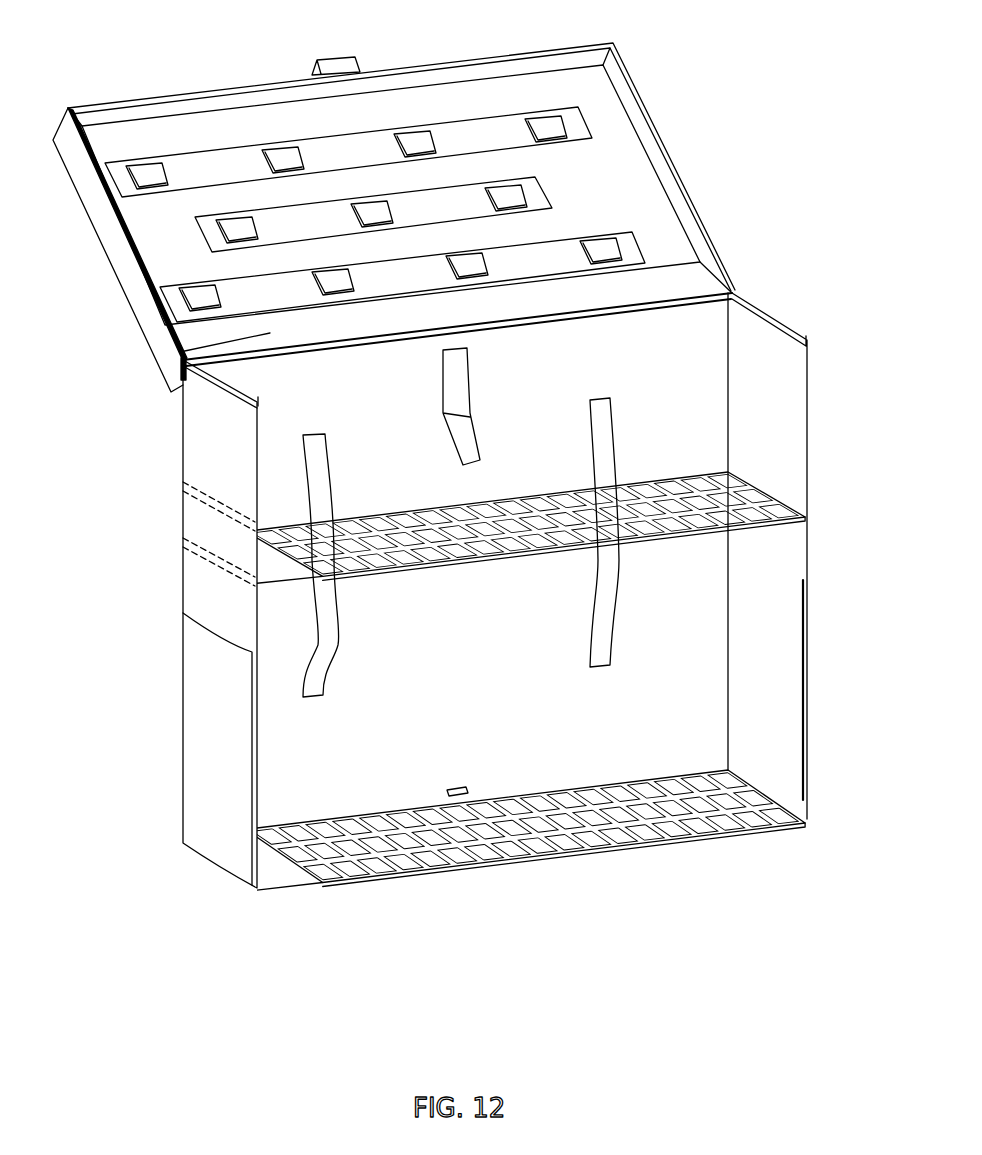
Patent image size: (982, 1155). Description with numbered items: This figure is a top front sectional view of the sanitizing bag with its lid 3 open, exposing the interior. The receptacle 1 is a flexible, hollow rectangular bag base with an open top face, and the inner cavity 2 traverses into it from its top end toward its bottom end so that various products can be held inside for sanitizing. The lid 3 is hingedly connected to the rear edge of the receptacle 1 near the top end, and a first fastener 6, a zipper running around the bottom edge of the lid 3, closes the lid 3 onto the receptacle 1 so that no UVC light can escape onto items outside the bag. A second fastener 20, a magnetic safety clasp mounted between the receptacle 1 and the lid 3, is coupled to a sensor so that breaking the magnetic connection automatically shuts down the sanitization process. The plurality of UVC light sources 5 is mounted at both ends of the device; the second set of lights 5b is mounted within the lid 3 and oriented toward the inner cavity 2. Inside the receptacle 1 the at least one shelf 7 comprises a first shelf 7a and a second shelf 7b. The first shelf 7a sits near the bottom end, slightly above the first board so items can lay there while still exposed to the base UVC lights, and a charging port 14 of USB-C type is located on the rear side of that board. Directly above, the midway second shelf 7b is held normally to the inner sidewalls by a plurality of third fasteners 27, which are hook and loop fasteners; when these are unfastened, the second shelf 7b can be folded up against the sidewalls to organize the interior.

The receptacle 1 is at (464, 447).
The inner cavity 2 is at (769, 455).
The lid 3 is at (400, 198).
The plurality of UVC light sources 5 is at (426, 214).
The second set of lights 5b is at (605, 250).
The first fastener 6 is at (735, 292).
The shelf 7 is at (526, 676).
The first shelf 7a is at (362, 820).
The second shelf 7b is at (352, 522).
The charging port 14 is at (465, 787).
The second fastener 20 is at (338, 63).
The plurality of third fasteners 27 is at (605, 440).